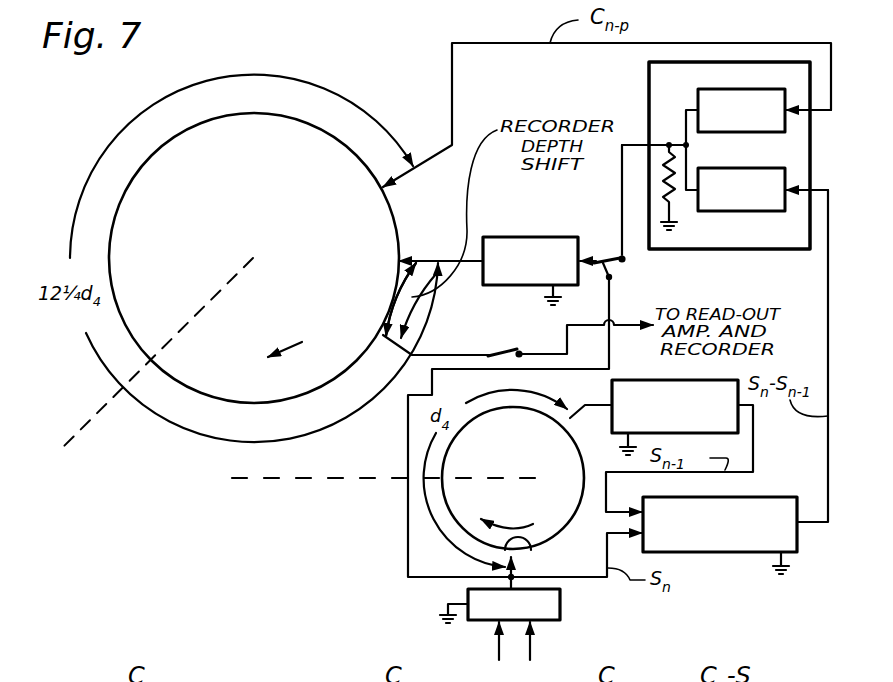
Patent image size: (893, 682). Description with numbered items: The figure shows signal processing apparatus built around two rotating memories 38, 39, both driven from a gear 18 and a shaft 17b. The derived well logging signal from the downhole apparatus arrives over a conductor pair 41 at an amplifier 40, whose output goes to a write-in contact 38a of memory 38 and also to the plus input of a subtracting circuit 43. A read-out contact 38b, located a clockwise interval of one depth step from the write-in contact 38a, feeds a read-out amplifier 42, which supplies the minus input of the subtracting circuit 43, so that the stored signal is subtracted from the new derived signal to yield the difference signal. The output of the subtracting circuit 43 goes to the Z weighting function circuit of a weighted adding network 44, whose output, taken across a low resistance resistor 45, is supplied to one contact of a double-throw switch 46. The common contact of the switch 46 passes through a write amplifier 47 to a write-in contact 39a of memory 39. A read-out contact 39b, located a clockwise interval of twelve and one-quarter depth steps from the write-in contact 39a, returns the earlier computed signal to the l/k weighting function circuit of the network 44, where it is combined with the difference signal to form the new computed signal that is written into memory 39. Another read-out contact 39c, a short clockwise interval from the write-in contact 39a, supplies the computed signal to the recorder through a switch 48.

The rotating memory 39 is at (200, 233).
The write-in contact 39a is at (405, 262).
The read-out contact 39b is at (383, 188).
The read-out contact 39c is at (383, 335).
The rotating memory 38 is at (555, 478).
The write-in contact 38a is at (531, 551).
The read-out contact 38b is at (568, 421).
The amplifier 40 is at (562, 604).
The conductor pair 41 is at (500, 636).
The read-out amplifier 42 is at (645, 380).
The subtracting circuit 43 is at (722, 553).
The weighted adding network 44 is at (648, 80).
The low resistance resistor 45 is at (674, 198).
The double-throw switch 46 is at (601, 258).
The write amplifier 47 is at (534, 237).
The switch 48 is at (505, 350).
The shaft 17b is at (88, 440).
The gear 18 is at (338, 469).